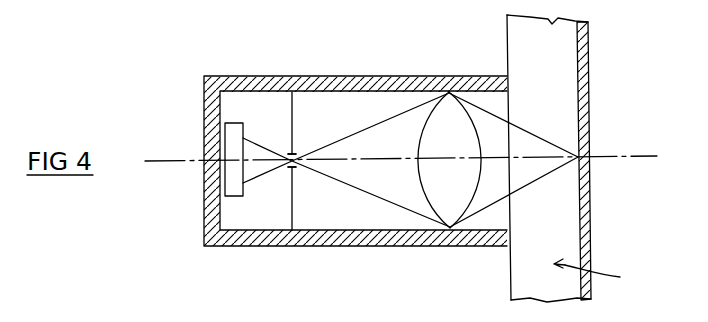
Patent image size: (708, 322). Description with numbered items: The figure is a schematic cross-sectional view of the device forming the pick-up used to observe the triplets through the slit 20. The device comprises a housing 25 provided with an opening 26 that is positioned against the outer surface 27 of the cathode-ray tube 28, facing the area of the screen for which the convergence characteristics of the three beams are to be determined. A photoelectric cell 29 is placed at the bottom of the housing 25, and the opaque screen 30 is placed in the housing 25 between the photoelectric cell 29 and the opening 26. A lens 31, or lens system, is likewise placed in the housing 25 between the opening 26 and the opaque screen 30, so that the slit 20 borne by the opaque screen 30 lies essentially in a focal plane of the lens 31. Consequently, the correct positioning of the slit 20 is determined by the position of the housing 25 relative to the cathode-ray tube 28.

The slit 20 is at (298, 167).
The housing 25 is at (415, 247).
The opening 26 is at (507, 95).
The outer surface 27 is at (508, 258).
The cathode-ray tube 28 is at (602, 275).
The photoelectric cell 29 is at (233, 148).
The opaque screen 30 is at (294, 109).
The lens 31 is at (446, 92).